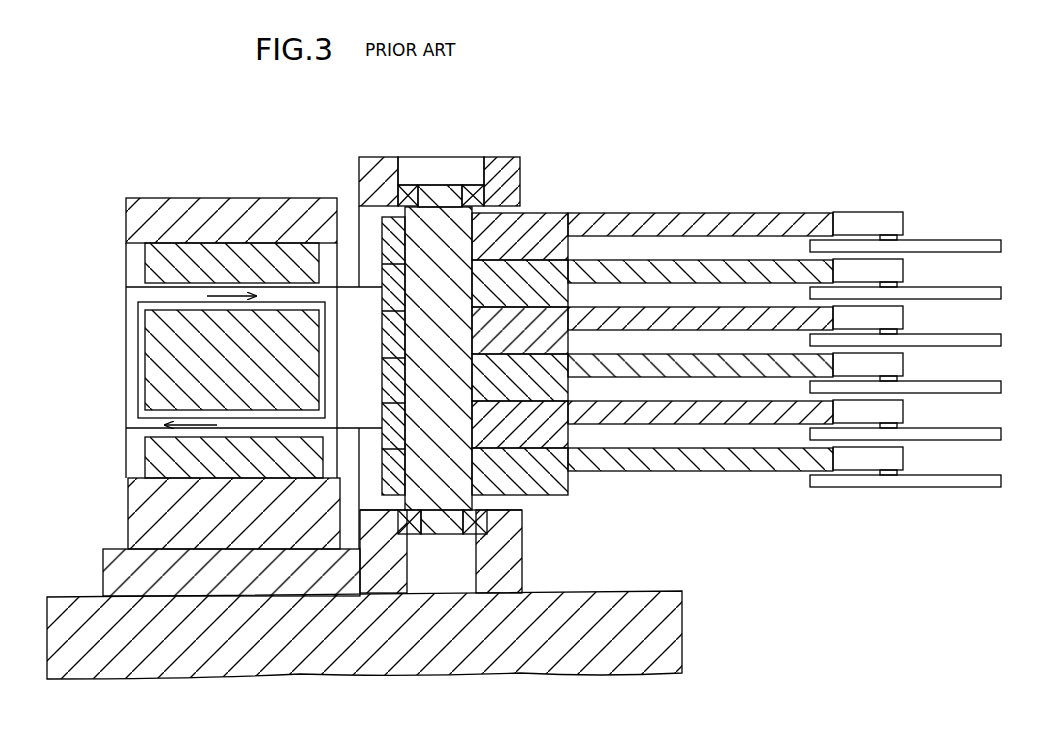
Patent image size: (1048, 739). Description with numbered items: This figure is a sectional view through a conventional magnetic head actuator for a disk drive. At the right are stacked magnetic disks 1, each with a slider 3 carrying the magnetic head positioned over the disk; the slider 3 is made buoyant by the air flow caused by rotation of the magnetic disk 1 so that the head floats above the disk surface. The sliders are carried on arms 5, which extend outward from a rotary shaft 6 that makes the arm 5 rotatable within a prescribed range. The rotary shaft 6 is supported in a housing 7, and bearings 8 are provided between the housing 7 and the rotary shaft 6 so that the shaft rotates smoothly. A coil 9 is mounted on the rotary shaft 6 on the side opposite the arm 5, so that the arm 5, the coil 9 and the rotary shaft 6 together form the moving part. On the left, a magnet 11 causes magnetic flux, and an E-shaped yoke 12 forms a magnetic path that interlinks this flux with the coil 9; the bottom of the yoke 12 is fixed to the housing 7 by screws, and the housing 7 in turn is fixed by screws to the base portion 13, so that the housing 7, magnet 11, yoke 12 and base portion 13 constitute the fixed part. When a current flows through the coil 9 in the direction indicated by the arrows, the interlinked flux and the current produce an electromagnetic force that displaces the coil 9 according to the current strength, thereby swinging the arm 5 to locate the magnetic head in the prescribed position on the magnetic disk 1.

The magnetic disk 1 is at (926, 244).
The slider 3 is at (900, 231).
The arm 5 is at (607, 222).
The rotary shaft 6 is at (478, 248).
The housing 7 is at (380, 157).
The bearing 8 is at (475, 185).
The coil 9 is at (127, 332).
The magnet 11 is at (150, 262).
The yoke 12 is at (127, 220).
The base portion 13 is at (647, 597).